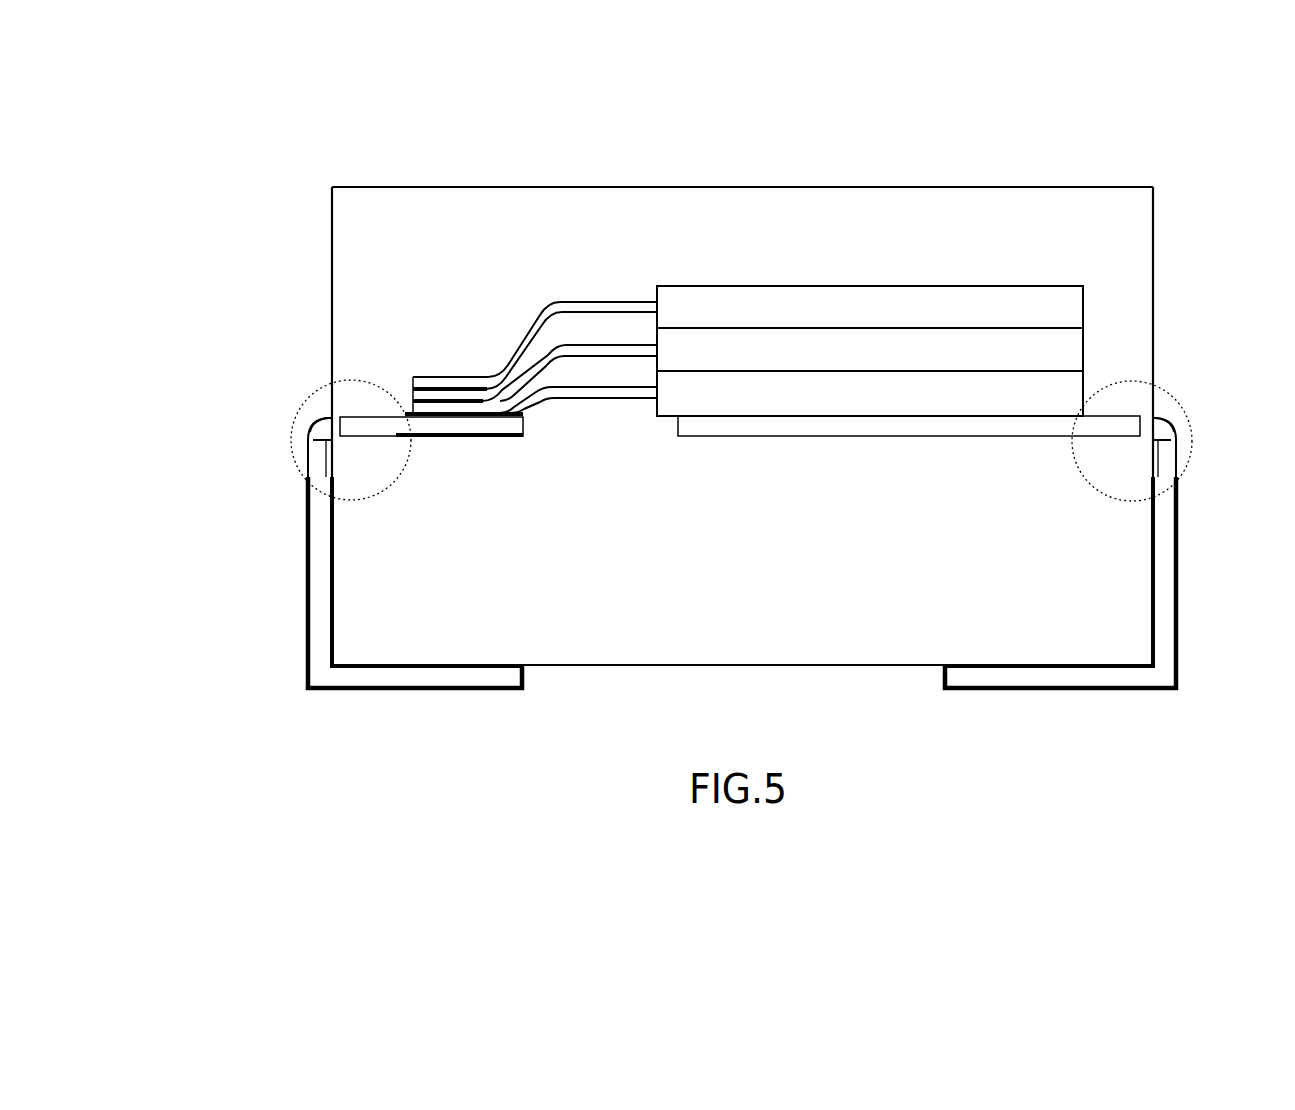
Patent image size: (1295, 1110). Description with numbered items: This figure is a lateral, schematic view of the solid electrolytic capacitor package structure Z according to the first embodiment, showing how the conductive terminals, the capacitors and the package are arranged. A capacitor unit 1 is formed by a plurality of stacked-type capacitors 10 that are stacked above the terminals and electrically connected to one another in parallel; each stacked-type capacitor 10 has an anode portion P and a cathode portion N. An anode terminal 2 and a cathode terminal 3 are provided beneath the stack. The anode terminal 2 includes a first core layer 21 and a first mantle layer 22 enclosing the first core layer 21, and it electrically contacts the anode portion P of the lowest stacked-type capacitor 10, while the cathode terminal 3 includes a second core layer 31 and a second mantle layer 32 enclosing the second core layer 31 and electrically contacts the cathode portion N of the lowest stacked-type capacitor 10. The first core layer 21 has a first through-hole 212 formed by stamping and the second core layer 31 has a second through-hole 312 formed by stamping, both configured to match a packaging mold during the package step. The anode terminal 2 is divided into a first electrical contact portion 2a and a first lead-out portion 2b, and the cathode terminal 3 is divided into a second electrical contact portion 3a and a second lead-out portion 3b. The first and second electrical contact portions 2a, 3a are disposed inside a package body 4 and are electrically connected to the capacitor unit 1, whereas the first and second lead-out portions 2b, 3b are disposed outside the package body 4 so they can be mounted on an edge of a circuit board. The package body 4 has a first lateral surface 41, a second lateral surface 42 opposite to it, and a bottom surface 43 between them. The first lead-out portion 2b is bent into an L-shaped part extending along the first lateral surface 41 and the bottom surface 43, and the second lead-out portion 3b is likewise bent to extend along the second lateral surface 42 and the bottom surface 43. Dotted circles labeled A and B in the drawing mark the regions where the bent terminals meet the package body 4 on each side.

The capacitor unit 1 is at (952, 310).
The stacked-type capacitor 10 is at (1088, 304).
The anode terminal 2 is at (356, 541).
The first electrical contact portion 2a is at (480, 440).
The first lead-out portion 2b is at (367, 541).
The first core layer 21 is at (322, 457).
The first through-hole 212 is at (314, 422).
The first mantle layer 22 is at (308, 522).
The cathode terminal 3 is at (984, 542).
The second electrical contact portion 3a is at (982, 440).
The second lead-out portion 3b is at (1107, 542).
The second core layer 31 is at (1163, 457).
The second through-hole 312 is at (1172, 425).
The second mantle layer 32 is at (1178, 513).
The package body 4 is at (745, 429).
The first lateral surface 41 is at (332, 296).
The second lateral surface 42 is at (1155, 238).
The bottom surface 43 is at (662, 666).
The cathode portion N is at (982, 285).
The anode portion P is at (516, 343).
The solid electrolytic capacitor package structure Z is at (1216, 126).
The detail region A is at (382, 497).
The detail region B is at (1100, 498).